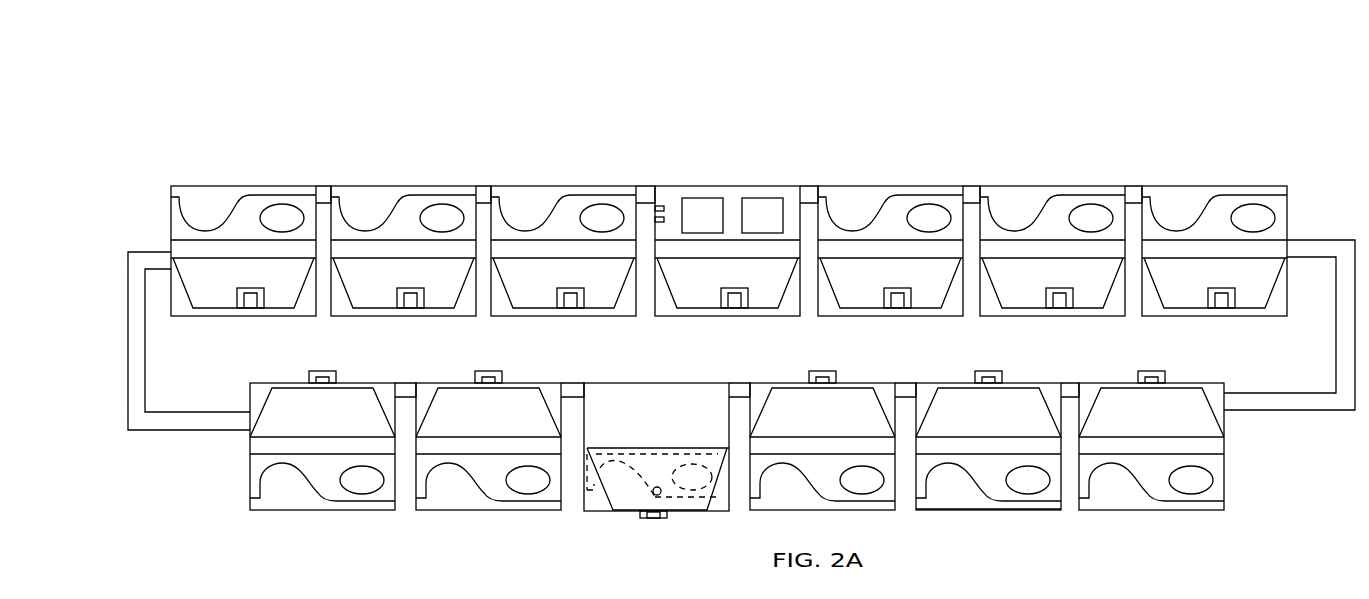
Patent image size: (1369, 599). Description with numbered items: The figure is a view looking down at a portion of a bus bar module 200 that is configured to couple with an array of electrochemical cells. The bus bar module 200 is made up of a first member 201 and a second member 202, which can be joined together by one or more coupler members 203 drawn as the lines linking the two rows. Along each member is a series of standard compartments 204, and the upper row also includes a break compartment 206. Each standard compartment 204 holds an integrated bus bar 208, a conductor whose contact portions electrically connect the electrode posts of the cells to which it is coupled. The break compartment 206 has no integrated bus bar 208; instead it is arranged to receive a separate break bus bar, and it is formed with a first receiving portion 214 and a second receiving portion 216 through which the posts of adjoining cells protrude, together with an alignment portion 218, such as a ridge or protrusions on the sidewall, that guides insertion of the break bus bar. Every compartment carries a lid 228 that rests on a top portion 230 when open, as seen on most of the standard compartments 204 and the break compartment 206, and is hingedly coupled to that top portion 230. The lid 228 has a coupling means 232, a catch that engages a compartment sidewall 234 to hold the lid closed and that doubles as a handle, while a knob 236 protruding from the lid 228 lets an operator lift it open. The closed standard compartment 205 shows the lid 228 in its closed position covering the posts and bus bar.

The bus bar module 200 is at (805, 80).
The first member 201 is at (173, 162).
The second member 202 is at (195, 517).
The coupler member 203 is at (143, 252).
The standard compartment 204 is at (262, 182).
The closed standard compartment 205 is at (608, 522).
The break compartment 206 is at (797, 183).
The integrated bus bar 208 is at (412, 203).
The first receiving portion 214 is at (697, 207).
The second receiving portion 216 is at (770, 207).
The alignment portion 218 is at (664, 207).
The lid 228 is at (688, 303).
The top portion 230 is at (500, 303).
The coupling means 232 is at (880, 308).
The compartment sidewall 234 is at (963, 512).
The knob 236 is at (661, 495).